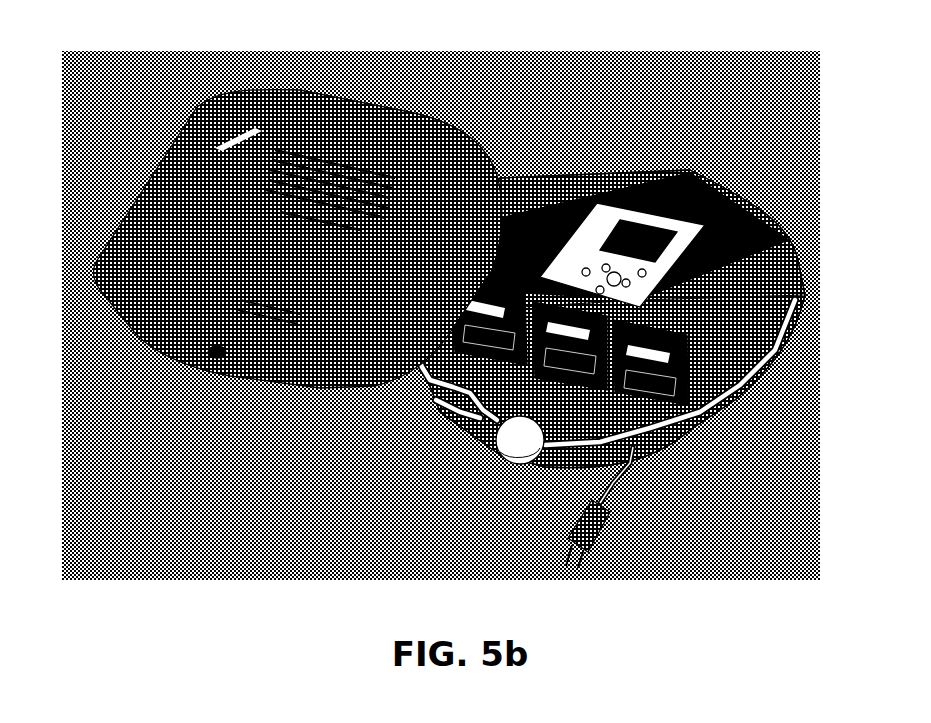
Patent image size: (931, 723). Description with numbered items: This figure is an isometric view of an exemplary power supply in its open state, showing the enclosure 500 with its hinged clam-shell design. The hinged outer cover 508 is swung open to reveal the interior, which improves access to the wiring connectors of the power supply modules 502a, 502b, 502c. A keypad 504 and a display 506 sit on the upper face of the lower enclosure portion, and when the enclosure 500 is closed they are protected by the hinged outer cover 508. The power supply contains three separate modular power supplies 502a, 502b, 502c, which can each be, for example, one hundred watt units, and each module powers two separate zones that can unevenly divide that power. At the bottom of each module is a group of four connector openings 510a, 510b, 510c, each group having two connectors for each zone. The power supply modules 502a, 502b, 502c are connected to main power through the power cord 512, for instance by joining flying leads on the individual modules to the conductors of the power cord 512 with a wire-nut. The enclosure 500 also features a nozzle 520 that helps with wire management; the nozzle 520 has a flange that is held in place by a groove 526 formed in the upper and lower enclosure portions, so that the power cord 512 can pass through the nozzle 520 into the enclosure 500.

The enclosure 500 is at (698, 150).
The power supply module 502a is at (412, 357).
The power supply module 502b is at (440, 415).
The power supply module 502c is at (718, 445).
The keypad 504 is at (573, 272).
The display 506 is at (623, 222).
The hinged outer cover 508 is at (150, 335).
The connector openings 510a is at (420, 382).
The connector openings 510b is at (570, 346).
The connector openings 510c is at (695, 458).
The power cord 512 is at (480, 423).
The nozzle 520 is at (517, 460).
The groove 526 is at (217, 352).